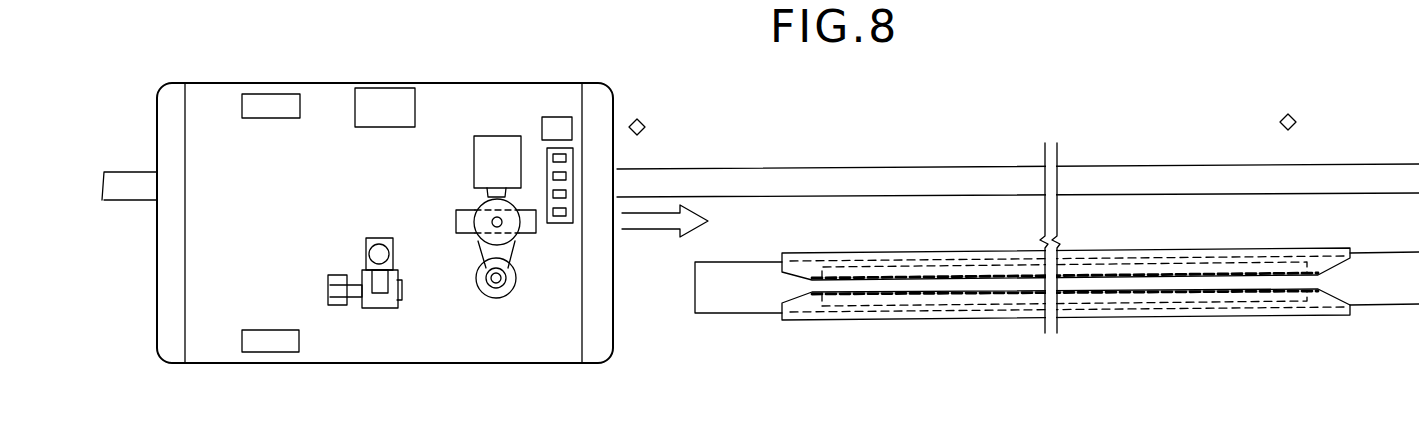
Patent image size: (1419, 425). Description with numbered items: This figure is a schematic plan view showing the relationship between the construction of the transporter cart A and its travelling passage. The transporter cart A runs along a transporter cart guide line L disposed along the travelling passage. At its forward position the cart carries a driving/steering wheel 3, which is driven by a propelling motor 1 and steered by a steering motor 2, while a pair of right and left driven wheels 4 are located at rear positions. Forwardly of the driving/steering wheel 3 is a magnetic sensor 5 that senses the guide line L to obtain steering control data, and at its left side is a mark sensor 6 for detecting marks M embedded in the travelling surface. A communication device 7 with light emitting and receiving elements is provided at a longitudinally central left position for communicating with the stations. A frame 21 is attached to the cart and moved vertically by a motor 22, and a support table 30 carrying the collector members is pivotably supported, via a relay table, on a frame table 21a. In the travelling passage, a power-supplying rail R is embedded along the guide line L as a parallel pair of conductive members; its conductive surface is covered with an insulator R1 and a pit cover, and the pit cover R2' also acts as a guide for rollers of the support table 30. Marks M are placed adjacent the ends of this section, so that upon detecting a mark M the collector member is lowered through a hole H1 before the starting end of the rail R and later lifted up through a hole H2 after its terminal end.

The propelling motor 1 is at (473, 163).
The steering motor 2 is at (480, 292).
The driving/steering wheel 3 is at (456, 220).
The driven wheels 4 is at (266, 97).
The magnetic sensor 5 is at (562, 223).
The mark sensor 6 is at (553, 117).
The communication device 7 is at (398, 88).
The frame 21 is at (398, 279).
The frame table 21a is at (380, 308).
The motor 22 is at (370, 240).
The support table 30 is at (336, 278).
The transporter cart A is at (612, 342).
The mark M is at (641, 118).
The transporter cart guide line L is at (903, 167).
The hole H1 is at (710, 312).
The hole H2 is at (1388, 300).
The insulator R1 is at (965, 257).
The pit cover R2' is at (1063, 300).
The power-supplying rail R is at (1262, 258).